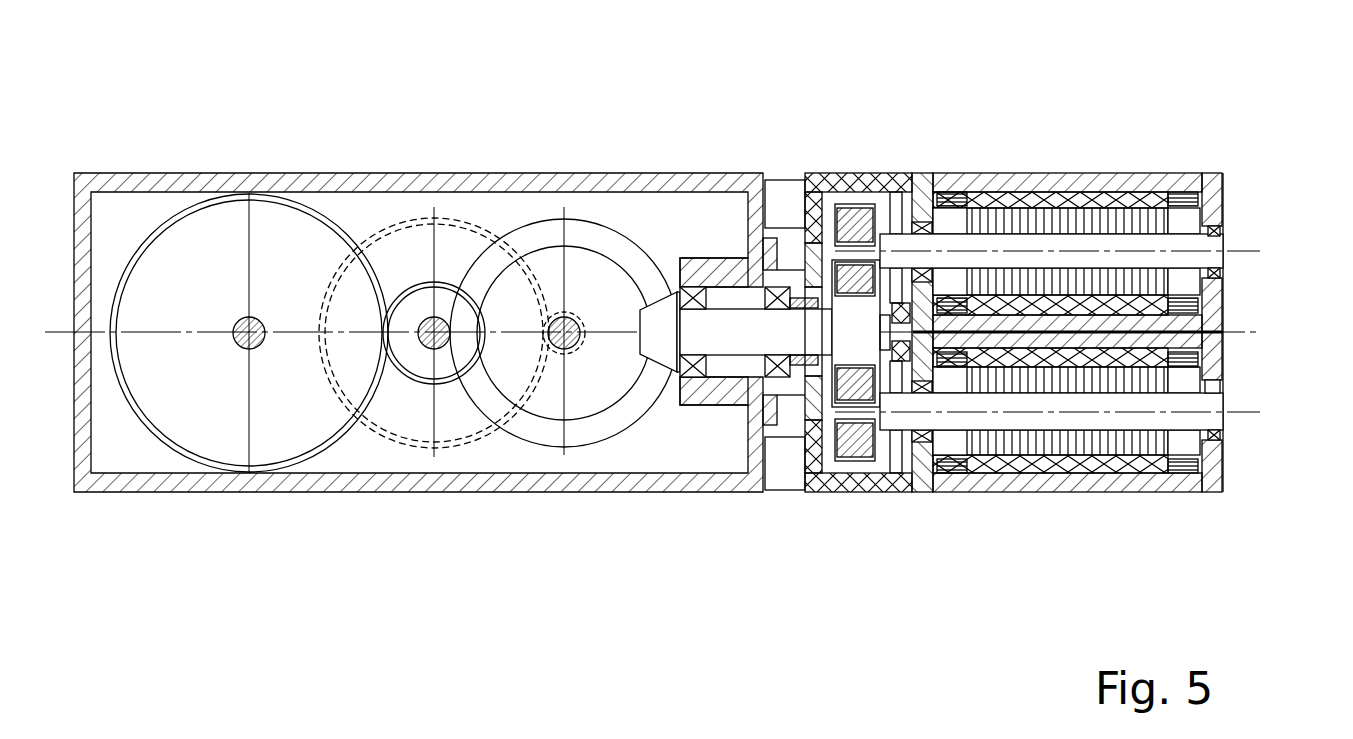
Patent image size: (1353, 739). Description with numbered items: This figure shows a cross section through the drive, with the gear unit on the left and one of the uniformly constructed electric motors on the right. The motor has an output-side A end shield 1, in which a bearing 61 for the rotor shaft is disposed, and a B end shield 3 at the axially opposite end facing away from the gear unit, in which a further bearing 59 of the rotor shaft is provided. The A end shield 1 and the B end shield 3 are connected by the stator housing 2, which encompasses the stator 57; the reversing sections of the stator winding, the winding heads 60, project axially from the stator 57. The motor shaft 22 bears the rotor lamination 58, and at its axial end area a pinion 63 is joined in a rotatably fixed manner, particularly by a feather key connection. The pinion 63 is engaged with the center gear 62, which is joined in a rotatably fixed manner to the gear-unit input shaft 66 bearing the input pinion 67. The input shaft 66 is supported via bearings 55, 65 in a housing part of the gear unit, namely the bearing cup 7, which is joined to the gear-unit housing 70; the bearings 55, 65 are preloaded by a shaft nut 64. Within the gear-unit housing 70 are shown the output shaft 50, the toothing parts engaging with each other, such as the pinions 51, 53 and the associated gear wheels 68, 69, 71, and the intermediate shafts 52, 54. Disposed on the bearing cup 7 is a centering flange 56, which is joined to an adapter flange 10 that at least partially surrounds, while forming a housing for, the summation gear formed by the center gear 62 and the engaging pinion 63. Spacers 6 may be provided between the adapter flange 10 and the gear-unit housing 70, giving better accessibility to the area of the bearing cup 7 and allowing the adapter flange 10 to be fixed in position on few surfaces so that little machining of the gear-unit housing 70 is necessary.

The A end shield 1 is at (1064, 333).
The stator housing 2 is at (1140, 182).
The B end shield 3 is at (1217, 202).
The spacers 6 is at (788, 462).
The bearing cup 7 is at (745, 283).
The adapter flange 10 is at (875, 183).
The motor shaft 22 is at (1117, 420).
The output shaft 50 is at (243, 330).
The pinion 51 is at (415, 307).
The intermediate shaft 52 is at (438, 327).
The pinion 53 is at (557, 312).
The intermediate shaft 54 is at (569, 327).
The bearing 55 is at (692, 297).
The centering flange 56 is at (813, 263).
The stator 57 is at (1062, 198).
The rotor lamination 58 is at (1128, 222).
The bearing 59 is at (1212, 387).
The winding head 60 is at (1183, 465).
The bearing 61 is at (923, 387).
The center gear 62 is at (860, 345).
The pinion 63 is at (855, 437).
The shaft nut 64 is at (808, 360).
The bearing 65 is at (778, 373).
The gear-unit input shaft 66 is at (740, 338).
The input pinion 67 is at (665, 343).
The gear wheel 68 is at (587, 383).
The gear wheel 69 is at (410, 403).
The gear-unit housing 70 is at (229, 484).
The gear wheel 71 is at (202, 397).